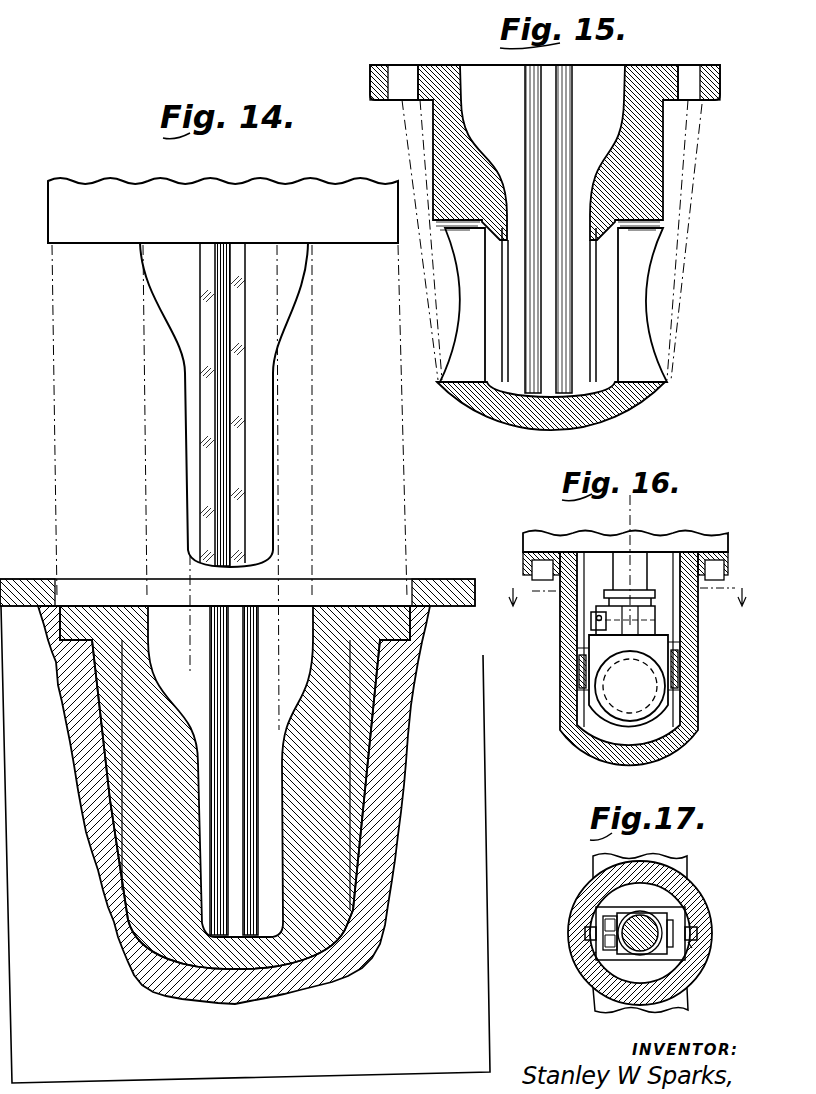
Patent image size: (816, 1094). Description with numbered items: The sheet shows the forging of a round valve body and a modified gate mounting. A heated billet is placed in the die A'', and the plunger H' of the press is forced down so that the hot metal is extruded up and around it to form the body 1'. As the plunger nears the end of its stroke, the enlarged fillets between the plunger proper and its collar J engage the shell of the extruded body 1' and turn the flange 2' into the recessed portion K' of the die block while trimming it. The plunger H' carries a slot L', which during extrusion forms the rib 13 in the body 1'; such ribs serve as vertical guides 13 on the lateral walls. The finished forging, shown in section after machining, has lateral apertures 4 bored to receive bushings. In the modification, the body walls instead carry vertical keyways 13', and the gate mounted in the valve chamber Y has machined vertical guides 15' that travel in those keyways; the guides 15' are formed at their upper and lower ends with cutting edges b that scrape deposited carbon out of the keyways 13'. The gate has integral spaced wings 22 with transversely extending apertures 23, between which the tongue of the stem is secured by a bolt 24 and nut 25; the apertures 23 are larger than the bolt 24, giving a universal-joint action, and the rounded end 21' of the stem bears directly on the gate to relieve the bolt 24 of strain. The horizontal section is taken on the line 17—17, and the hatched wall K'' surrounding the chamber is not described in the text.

In FIG. 14, the collar J is at (223, 210).
In FIG. 14, the plunger H' is at (239, 405).
In FIG. 14, the slot L' is at (290, 404).
In FIG. 14, the flange 2' is at (237, 575).
In FIG. 14, the rib (vertical guide) 13 is at (183, 742).
In FIG. 15, the rib (vertical guide) 13 is at (563, 215).
In FIG. 14, the recessed portion of die block K' is at (259, 805).
In FIG. 14, the forged valve body 1' is at (290, 787).
In FIG. 14, the die A'' is at (264, 844).
In FIG. 15, the lateral apertures 4 is at (553, 305).
In FIG. 16, the spaced wings 22 is at (610, 593).
In FIG. 16, the transversely extending apertures 23 is at (632, 530).
In FIG. 16, the section line 17— 17 is at (630, 587).
In FIG. 16, the nut 25 is at (595, 622).
In FIG. 16, the bolt 24 is at (657, 615).
In FIG. 16, the cutting edges b is at (560, 653).
In FIG. 16, the vertical guides 15' is at (635, 669).
In FIG. 17, the vertical guides 15' is at (645, 976).
In FIG. 16, the mold casing K'' is at (589, 658).
In FIG. 16, the rounded end of valve stem 21' is at (630, 678).
In FIG. 16, the valve chamber Y is at (662, 723).
In FIG. 17, the vertical keyways 13' is at (649, 904).